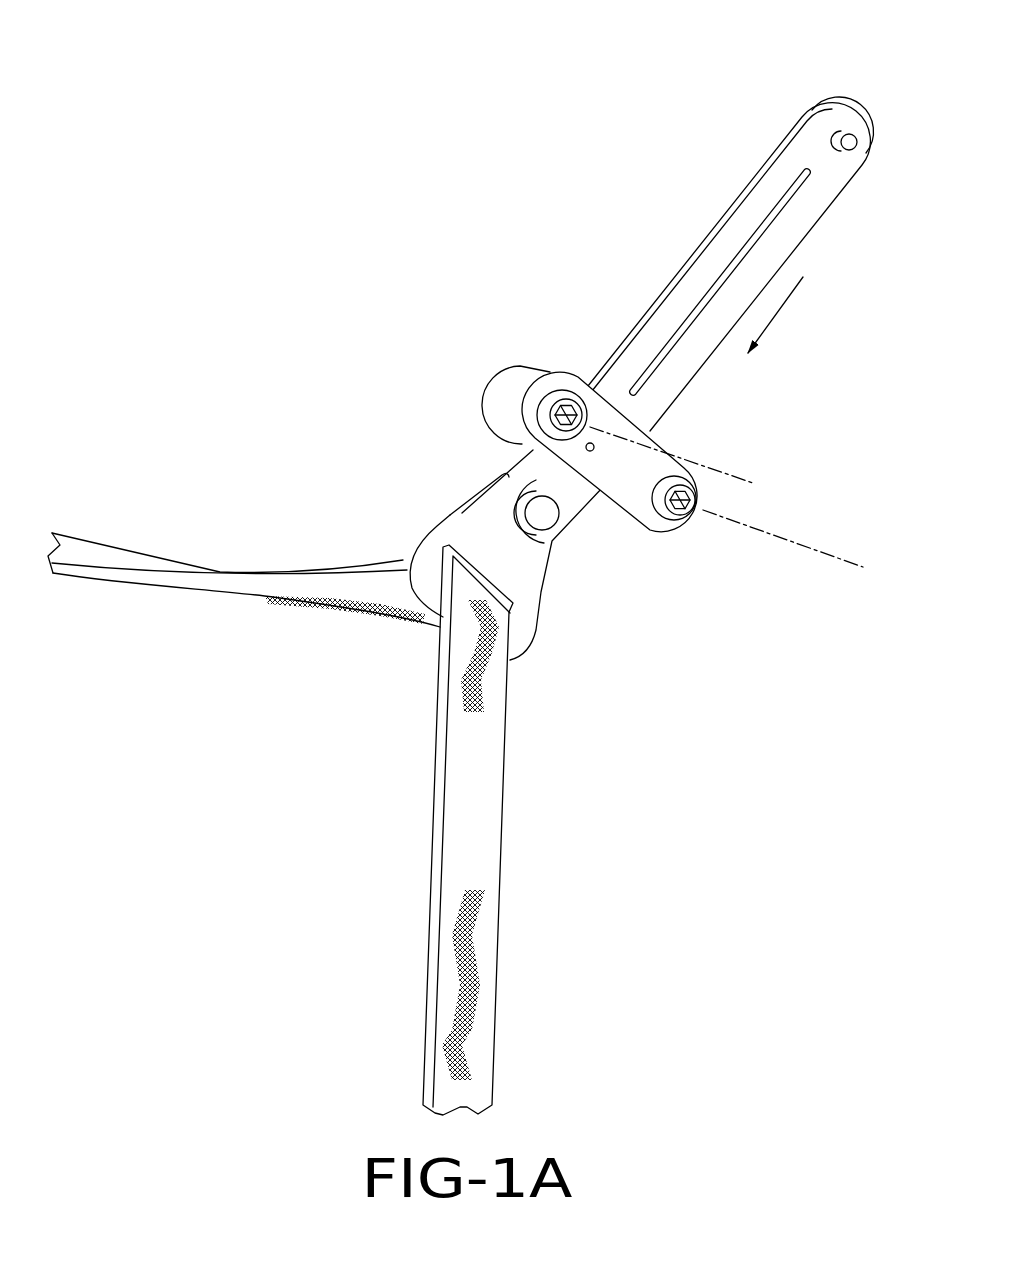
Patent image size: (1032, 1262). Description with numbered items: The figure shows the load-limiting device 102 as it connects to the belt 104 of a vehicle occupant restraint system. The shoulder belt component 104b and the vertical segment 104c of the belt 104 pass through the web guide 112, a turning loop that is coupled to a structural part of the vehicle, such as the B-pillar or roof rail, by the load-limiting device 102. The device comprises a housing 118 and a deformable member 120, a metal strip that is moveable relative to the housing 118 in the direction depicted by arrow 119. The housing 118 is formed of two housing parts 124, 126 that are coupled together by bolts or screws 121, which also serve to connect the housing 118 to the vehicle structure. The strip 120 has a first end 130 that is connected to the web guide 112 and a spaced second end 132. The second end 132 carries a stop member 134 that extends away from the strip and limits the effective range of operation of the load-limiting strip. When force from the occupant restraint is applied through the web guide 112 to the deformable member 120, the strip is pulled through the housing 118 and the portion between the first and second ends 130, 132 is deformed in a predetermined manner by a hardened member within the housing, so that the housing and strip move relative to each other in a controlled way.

The load-limiting device 102 is at (724, 124).
The belt 104 is at (505, 815).
The shoulder belt component 104b is at (107, 554).
The vertical segment 104c is at (487, 967).
The web guide 112 is at (428, 543).
The housing 118 is at (477, 425).
The arrow 119 is at (790, 297).
The deformable member 120 is at (673, 282).
The bolts or screws 121 is at (558, 392).
The housing part 124 is at (527, 383).
The housing part 126 is at (490, 392).
The first end 130 is at (582, 520).
The second end 132 is at (850, 106).
The stop member 134 is at (856, 146).